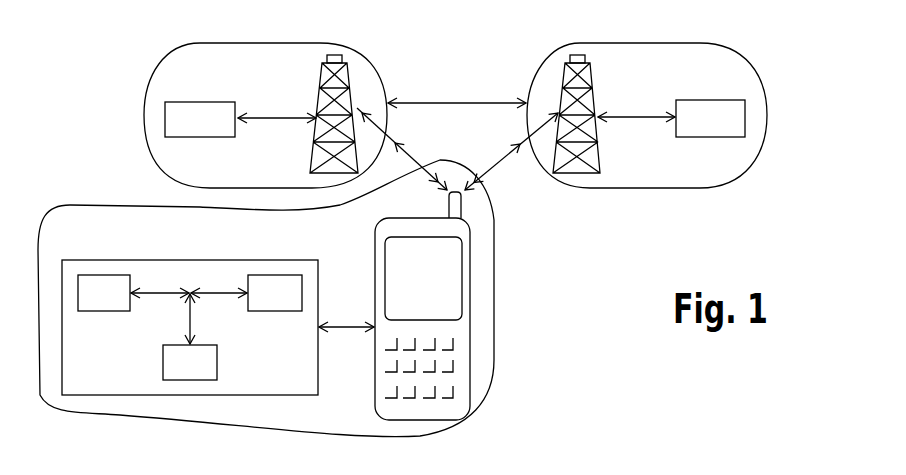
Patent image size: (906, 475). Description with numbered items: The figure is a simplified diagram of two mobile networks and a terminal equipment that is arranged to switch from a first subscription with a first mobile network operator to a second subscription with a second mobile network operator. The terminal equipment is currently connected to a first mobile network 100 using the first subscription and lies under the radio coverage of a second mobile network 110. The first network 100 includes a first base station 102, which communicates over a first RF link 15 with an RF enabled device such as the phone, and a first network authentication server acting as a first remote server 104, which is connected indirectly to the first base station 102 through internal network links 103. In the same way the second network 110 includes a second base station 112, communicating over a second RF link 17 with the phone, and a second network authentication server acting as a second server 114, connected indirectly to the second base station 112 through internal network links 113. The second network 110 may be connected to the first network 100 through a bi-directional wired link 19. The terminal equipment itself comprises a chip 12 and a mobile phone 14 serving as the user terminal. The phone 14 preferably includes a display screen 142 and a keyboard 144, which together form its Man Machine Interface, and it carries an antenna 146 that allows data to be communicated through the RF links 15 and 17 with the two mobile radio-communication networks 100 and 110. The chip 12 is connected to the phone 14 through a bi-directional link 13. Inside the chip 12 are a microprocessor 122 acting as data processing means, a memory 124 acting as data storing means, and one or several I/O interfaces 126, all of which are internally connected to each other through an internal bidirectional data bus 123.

The first mobile network 100 is at (163, 58).
The first base station 102 is at (322, 90).
The internal network links 103 is at (262, 116).
The first server 104 is at (213, 112).
The second mobile network 110 is at (668, 43).
The second base station 112 is at (585, 89).
The internal network links 113 is at (642, 116).
The second server 114 is at (698, 120).
The bi-directional wired link 19 is at (452, 103).
The first RF link 15 is at (396, 146).
The second RF link 17 is at (487, 171).
The bi-directional link 13 is at (353, 323).
The chip 12 is at (262, 395).
The microprocessor 122 is at (107, 287).
The internal bidirectional data bus 123 is at (192, 288).
The memory 124 is at (273, 287).
The I/O interfaces 126 is at (192, 372).
The mobile phone 14 is at (470, 388).
The display screen 142 is at (462, 288).
The keyboard 144 is at (452, 345).
The antenna 146 is at (460, 212).